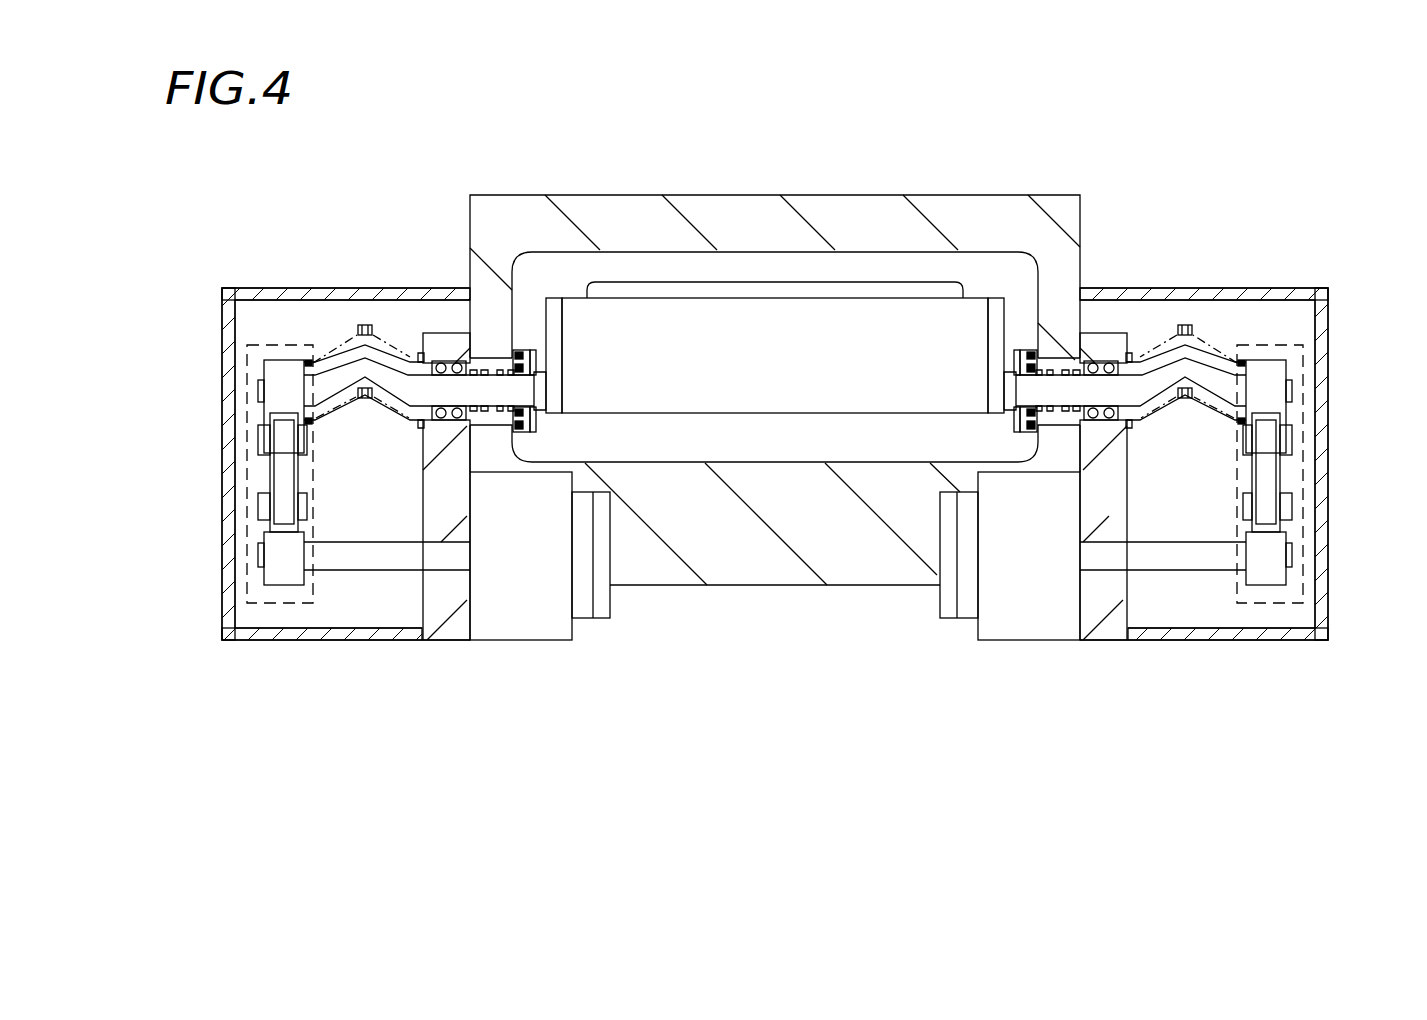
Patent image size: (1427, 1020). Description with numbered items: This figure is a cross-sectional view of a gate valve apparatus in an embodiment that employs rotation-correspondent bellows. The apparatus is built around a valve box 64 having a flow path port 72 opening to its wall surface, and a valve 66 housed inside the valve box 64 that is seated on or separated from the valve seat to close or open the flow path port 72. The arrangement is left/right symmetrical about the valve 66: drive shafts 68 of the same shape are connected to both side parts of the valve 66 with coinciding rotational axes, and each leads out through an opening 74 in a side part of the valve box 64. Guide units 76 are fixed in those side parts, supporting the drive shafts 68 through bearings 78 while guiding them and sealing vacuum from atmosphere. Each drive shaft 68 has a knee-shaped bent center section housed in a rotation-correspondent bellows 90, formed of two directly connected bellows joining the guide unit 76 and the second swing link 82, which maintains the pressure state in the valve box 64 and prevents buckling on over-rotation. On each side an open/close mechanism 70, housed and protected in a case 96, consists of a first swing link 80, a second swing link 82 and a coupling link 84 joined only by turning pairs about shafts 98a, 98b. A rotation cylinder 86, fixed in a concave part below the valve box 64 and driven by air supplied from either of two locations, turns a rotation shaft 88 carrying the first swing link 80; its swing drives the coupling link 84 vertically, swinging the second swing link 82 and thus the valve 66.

The valve box 64 is at (965, 210).
The valve 66 is at (748, 340).
The flow path port 72 is at (860, 290).
The opening 74 is at (487, 360).
The drive shaft 68 is at (338, 375).
The rotation-correspondent bellows 90 is at (393, 372).
The bearing 78 is at (440, 360).
The guide unit 76 is at (441, 626).
The rotation cylinder 86 is at (522, 625).
The case 96 is at (268, 630).
The open/close mechanism 70 is at (282, 345).
The second swing link 82 is at (268, 372).
The shaft 98b is at (258, 440).
The coupling link 84 is at (278, 478).
The shaft 98a is at (258, 510).
The first swing link 80 is at (270, 573).
The rotation shaft 88 is at (333, 565).